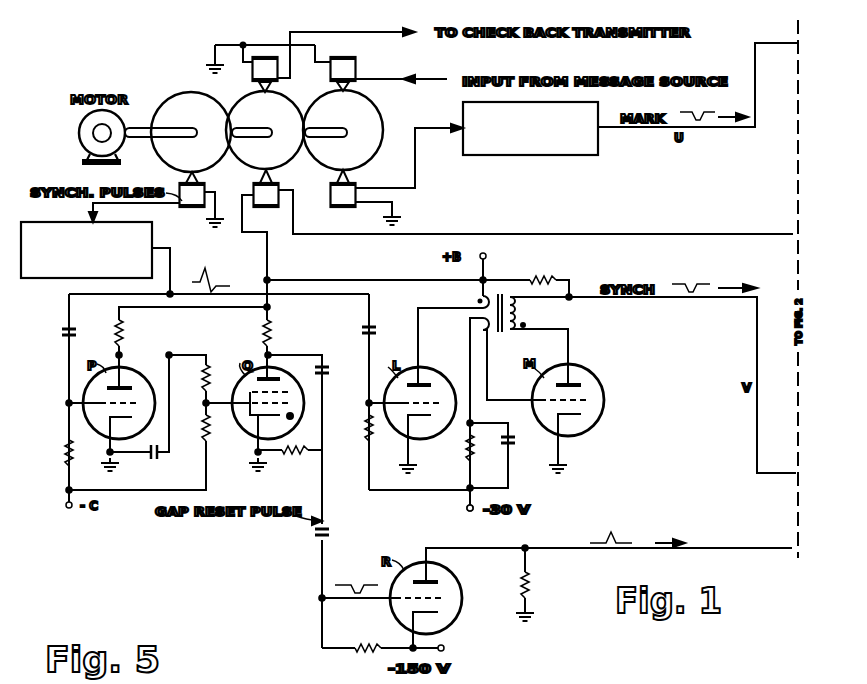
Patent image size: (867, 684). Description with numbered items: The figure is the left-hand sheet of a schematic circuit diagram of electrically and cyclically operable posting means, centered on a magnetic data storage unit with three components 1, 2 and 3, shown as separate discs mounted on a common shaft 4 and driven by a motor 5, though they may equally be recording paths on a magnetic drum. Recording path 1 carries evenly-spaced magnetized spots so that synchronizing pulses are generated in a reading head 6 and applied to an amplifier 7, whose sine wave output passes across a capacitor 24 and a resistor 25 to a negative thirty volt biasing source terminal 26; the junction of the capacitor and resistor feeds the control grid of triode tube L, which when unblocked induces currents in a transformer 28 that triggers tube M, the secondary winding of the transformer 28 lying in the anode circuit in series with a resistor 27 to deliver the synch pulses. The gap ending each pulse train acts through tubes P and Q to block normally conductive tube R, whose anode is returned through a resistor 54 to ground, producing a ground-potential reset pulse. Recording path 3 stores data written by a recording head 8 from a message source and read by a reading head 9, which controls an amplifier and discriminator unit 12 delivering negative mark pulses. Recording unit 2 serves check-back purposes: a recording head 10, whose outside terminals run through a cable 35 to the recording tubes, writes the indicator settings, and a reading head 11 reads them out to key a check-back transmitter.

The disc or recording path 1 is at (172, 96).
The recording unit 2 is at (247, 98).
The disc or recording path 3 is at (377, 107).
The common shaft 4 is at (134, 128).
The motor 5 is at (79, 124).
The reading head 6 is at (208, 190).
The amplifier 7 is at (62, 221).
The recording head 8 is at (354, 64).
The reading head 9 is at (330, 190).
The recording head 10 is at (260, 208).
The reading head 11 is at (265, 52).
The amplifier and discriminator unit 12 is at (490, 155).
The capacitor 24 is at (362, 333).
The resistor 25 is at (364, 426).
The -30 volt biasing source terminal 26 is at (473, 512).
The resistor 27 is at (540, 280).
The transformer 28 is at (500, 292).
The cable 35 is at (555, 234).
The resistor 54 is at (530, 596).